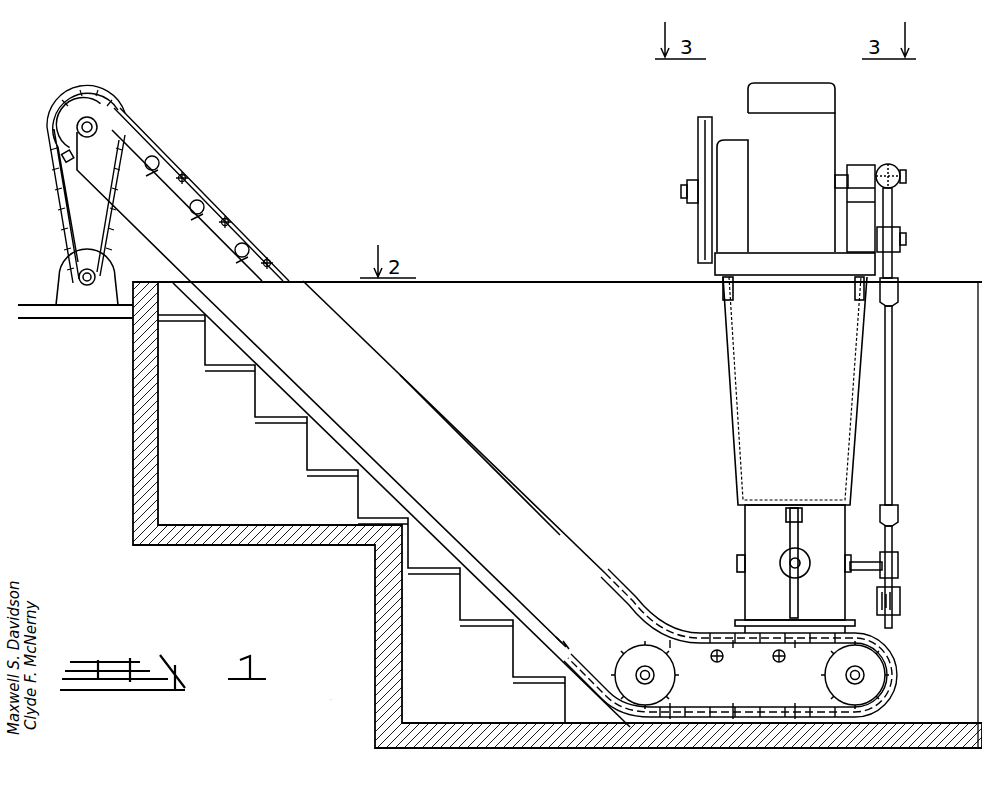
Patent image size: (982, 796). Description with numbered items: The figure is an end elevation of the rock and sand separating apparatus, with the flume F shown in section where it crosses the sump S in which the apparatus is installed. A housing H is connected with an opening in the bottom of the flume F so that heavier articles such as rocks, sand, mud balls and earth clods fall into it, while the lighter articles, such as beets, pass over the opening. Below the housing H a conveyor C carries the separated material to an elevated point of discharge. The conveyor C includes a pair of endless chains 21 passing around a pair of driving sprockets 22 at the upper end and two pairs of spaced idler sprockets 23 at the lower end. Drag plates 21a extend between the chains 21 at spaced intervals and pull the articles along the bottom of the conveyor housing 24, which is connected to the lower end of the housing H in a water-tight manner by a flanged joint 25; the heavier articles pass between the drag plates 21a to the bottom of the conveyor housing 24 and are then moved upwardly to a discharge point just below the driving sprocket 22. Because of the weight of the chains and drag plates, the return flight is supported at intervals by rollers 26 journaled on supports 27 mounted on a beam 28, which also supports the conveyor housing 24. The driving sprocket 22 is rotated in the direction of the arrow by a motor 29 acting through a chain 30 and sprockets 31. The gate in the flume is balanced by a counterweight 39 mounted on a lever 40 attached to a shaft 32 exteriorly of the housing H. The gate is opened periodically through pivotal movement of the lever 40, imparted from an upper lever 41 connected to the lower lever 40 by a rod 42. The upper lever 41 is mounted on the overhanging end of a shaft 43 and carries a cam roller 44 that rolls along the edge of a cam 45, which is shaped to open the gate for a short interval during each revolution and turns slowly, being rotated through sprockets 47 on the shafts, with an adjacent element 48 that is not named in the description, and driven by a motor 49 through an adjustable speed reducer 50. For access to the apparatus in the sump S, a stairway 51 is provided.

The endless chains 21 is at (148, 140).
The drag plates 21a is at (725, 698).
The driving sprockets 22 is at (112, 123).
The idler sprockets 23 is at (676, 680).
The conveyor housing 24 is at (565, 541).
The flanged joint 25 is at (735, 622).
The rollers 26 is at (162, 163).
The supports 27 is at (186, 178).
The beam 28 is at (165, 238).
The motor 29 is at (62, 272).
The chain 30 is at (60, 205).
The sprockets 31 is at (69, 160).
The shaft 32 is at (862, 560).
The counterweight 39 is at (901, 595).
The lever 40 is at (897, 542).
The upper lever 41 is at (893, 268).
The rod 42 is at (895, 398).
The shaft 43 is at (901, 242).
The cam roller 44 is at (894, 222).
The cam 45 is at (892, 200).
The sprockets 47 is at (700, 152).
The bearing block 48 is at (840, 175).
The motor 49 is at (828, 102).
The adjustable speed reducer 50 is at (827, 133).
The stairway 51 is at (460, 596).
The conveyor C is at (468, 449).
The flume F is at (730, 355).
The housing H is at (743, 520).
The sump S is at (980, 690).